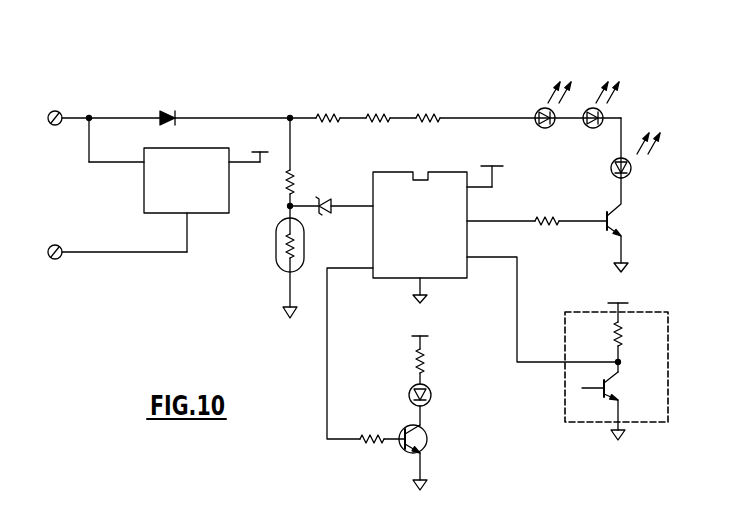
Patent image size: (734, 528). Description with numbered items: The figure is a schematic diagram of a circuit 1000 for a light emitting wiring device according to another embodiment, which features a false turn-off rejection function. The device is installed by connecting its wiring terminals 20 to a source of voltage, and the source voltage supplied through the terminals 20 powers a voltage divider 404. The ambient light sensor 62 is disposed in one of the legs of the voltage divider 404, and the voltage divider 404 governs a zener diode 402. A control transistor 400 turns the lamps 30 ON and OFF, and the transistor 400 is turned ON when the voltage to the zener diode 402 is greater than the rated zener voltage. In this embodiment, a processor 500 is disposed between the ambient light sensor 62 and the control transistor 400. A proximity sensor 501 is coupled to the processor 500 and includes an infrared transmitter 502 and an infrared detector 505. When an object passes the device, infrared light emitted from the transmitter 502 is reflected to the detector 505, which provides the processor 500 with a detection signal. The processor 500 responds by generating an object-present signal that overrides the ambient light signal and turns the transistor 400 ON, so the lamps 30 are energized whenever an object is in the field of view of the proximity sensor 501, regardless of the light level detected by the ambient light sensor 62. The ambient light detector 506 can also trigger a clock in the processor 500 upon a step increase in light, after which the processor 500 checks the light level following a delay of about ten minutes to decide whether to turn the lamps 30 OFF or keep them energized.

The wiring terminals 20 is at (51, 111).
The lamps 30 is at (593, 129).
The ambient light sensor 62 is at (278, 250).
The control transistor 400 is at (624, 204).
The zener diode 402 is at (323, 213).
The voltage divider 404 is at (274, 206).
The processor 500 is at (397, 186).
The proximity sensor 501 is at (505, 455).
The infrared transmitter 502 is at (430, 385).
The infrared detector 505 is at (522, 377).
The ambient light detector 506 is at (322, 166).
The circuit 1000 is at (595, 38).